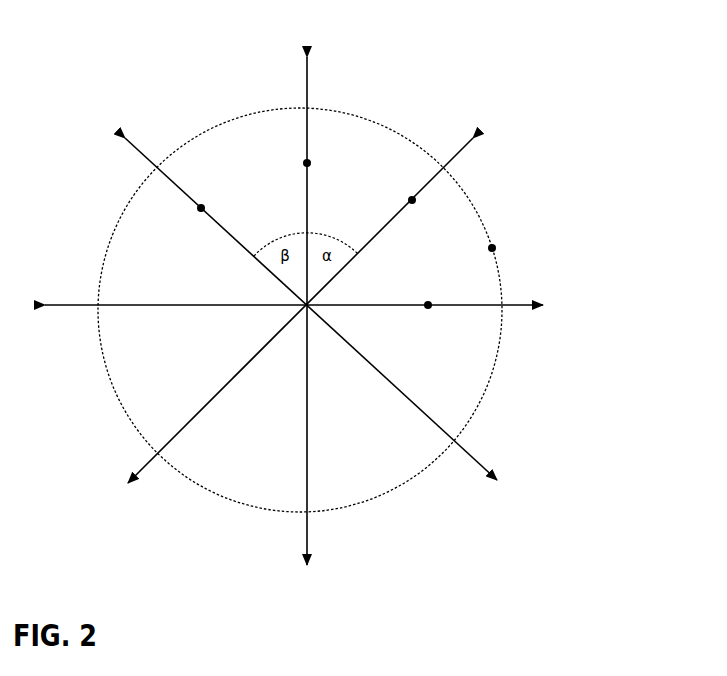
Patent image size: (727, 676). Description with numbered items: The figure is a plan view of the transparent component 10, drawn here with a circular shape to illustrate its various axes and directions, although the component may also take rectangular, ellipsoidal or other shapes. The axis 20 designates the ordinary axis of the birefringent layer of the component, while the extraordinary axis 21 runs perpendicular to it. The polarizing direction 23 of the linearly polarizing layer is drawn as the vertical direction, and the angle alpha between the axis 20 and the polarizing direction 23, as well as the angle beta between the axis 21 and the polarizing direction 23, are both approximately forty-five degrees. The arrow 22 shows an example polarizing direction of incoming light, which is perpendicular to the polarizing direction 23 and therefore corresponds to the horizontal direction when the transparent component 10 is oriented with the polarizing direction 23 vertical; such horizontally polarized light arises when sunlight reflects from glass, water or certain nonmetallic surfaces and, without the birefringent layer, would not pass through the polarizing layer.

The transparent component 10 is at (494, 245).
The ordinary axis 20 is at (414, 197).
The extraordinary axis 21 is at (203, 205).
The polarizing direction of incoming light 22 is at (433, 310).
The polarizing direction of linearly polarizing layer 23 is at (309, 160).